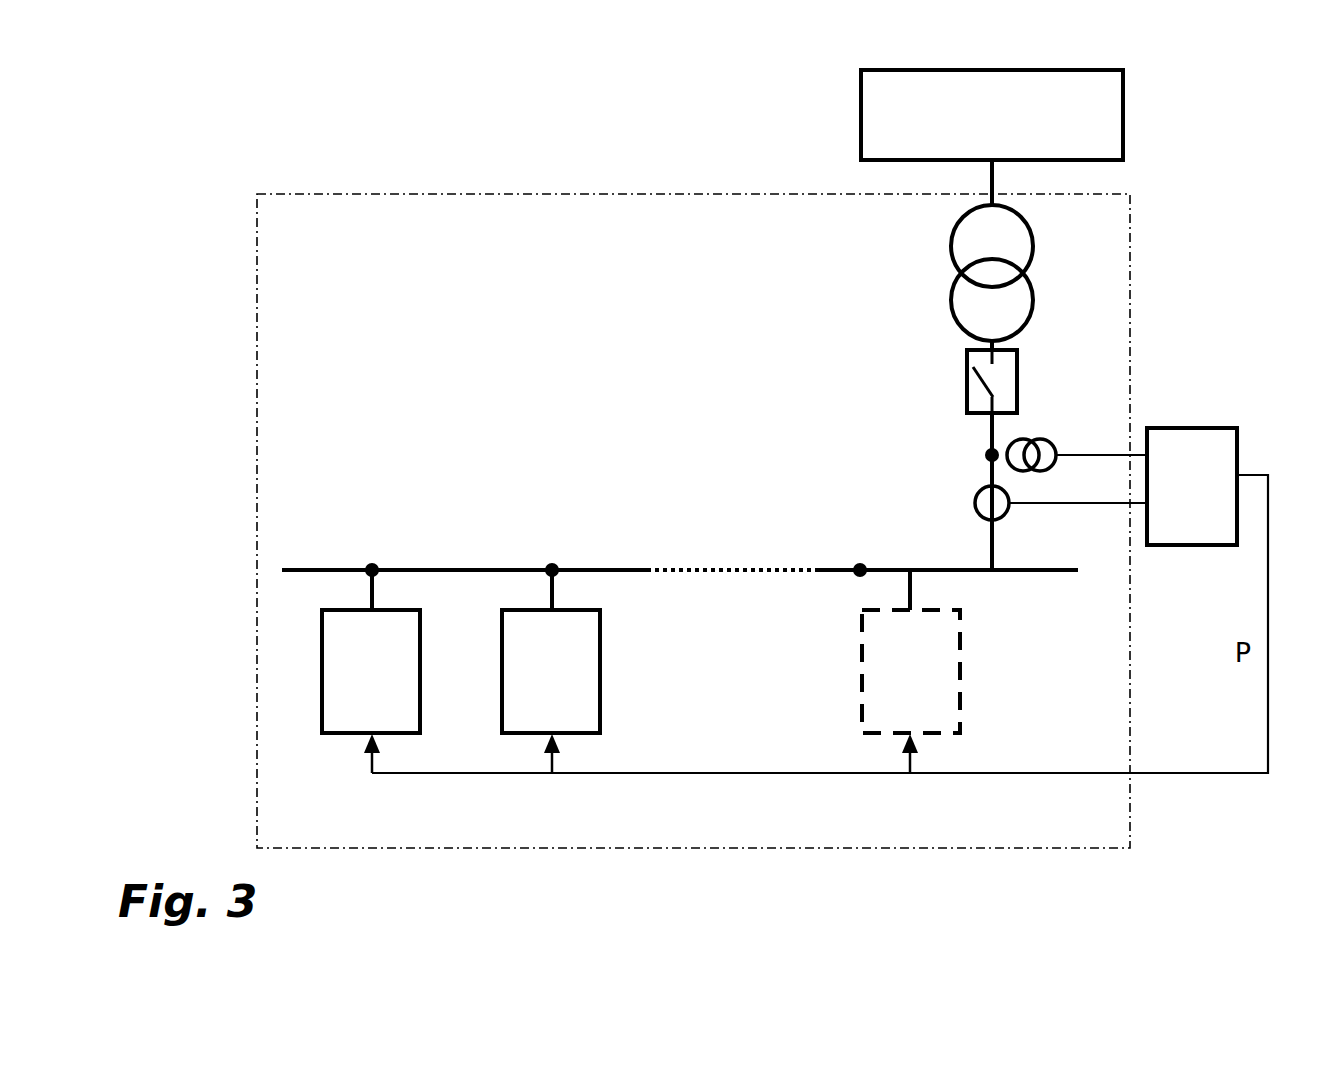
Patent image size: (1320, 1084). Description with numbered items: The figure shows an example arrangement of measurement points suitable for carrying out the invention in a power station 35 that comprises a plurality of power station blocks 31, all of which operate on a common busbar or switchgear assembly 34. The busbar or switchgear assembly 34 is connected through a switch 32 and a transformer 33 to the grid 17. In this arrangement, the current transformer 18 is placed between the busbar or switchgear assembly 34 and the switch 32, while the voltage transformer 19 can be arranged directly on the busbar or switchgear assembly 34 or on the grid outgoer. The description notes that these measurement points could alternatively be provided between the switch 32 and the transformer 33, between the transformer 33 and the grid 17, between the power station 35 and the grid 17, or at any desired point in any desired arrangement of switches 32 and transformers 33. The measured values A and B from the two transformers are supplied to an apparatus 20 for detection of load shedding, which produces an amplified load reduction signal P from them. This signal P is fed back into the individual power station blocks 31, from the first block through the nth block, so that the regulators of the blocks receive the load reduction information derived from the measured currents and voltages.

The grid 17 is at (992, 115).
The transformer 33 is at (1016, 273).
The switch 32 is at (1014, 381).
The voltage transformer 19 is at (1038, 448).
The current transformer 18 is at (1038, 493).
The apparatus for detection of load shedding 20 is at (1192, 486).
The busbar or switchgear assembly 34 is at (680, 554).
The power station blocks 31 is at (641, 704).
The power station 35 is at (693, 521).